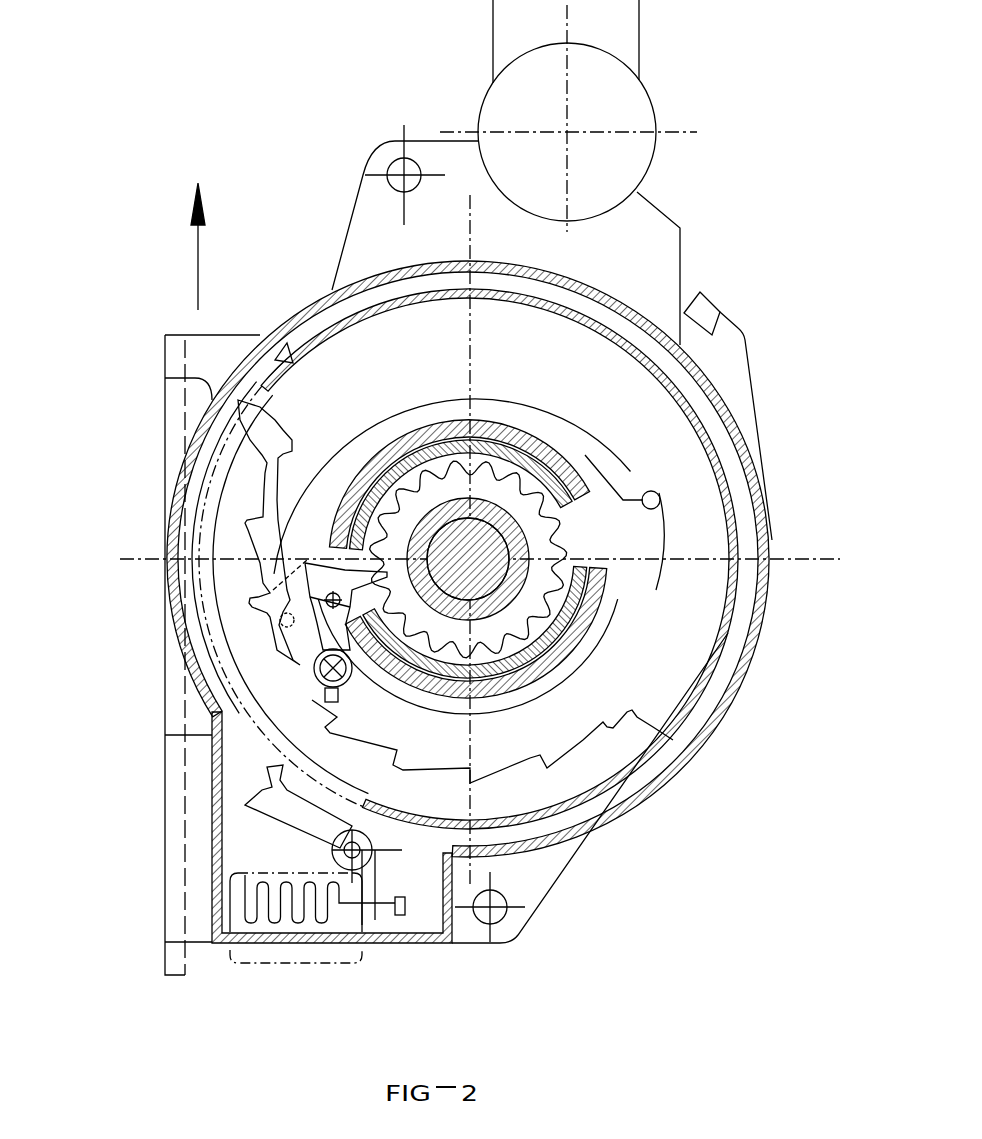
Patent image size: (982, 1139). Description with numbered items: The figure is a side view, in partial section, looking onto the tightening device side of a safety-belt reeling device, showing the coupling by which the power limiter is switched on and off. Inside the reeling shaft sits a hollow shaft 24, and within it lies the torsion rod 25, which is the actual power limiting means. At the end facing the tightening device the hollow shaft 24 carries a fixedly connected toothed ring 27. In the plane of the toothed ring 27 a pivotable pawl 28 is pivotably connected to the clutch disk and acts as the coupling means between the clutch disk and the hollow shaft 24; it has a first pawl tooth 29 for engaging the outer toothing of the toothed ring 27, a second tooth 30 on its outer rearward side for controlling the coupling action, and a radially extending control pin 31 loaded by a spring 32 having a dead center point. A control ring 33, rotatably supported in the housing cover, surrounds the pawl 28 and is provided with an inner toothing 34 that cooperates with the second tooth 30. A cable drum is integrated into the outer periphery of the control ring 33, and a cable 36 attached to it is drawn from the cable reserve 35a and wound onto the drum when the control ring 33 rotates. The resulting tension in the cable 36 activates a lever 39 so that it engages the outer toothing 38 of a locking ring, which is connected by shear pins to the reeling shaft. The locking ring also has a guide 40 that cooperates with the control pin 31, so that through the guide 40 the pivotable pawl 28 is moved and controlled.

The hollow shaft 24 is at (512, 512).
The torsion rod 25 is at (367, 464).
The toothed ring 27 is at (607, 591).
The pivotable pawl 28 is at (320, 612).
The first pawl tooth 29 is at (368, 563).
The second tooth 30 is at (338, 560).
The control pin 31 is at (325, 599).
The spring 32 is at (320, 697).
The control ring 33 is at (548, 783).
The inner toothing 34 is at (590, 742).
The cable reserve 35a is at (230, 957).
The cable 36 is at (222, 782).
The outer toothing 38 is at (775, 586).
The lever 39 is at (293, 822).
The guide 40 is at (647, 617).